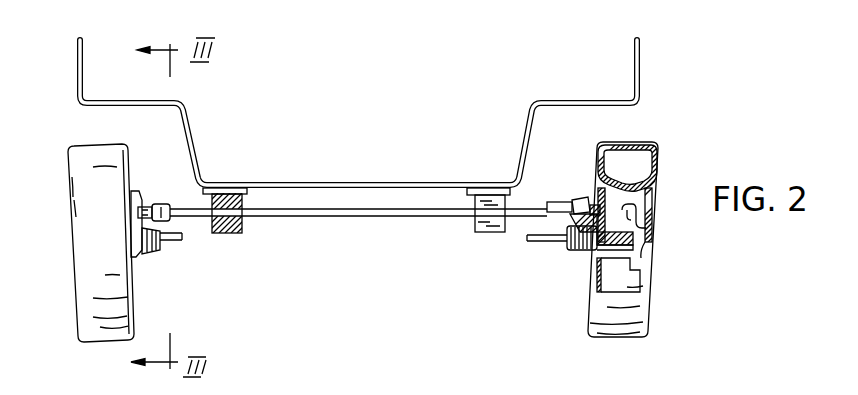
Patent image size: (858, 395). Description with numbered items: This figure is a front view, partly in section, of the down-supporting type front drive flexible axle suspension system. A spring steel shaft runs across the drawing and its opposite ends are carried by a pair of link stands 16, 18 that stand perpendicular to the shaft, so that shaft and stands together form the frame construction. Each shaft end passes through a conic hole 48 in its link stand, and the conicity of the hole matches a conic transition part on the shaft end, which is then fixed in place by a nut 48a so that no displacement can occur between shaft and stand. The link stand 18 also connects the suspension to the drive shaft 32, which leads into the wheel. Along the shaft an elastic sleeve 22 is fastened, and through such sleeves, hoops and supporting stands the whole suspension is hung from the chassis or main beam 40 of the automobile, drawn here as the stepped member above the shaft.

The main beam 40 is at (416, 182).
The elastic sleeve 22 is at (225, 233).
The link stand 16 is at (176, 218).
The nut 48a is at (143, 200).
The conic hole 48 is at (540, 206).
The link stand 18 is at (553, 205).
The drive shaft 32 is at (573, 250).